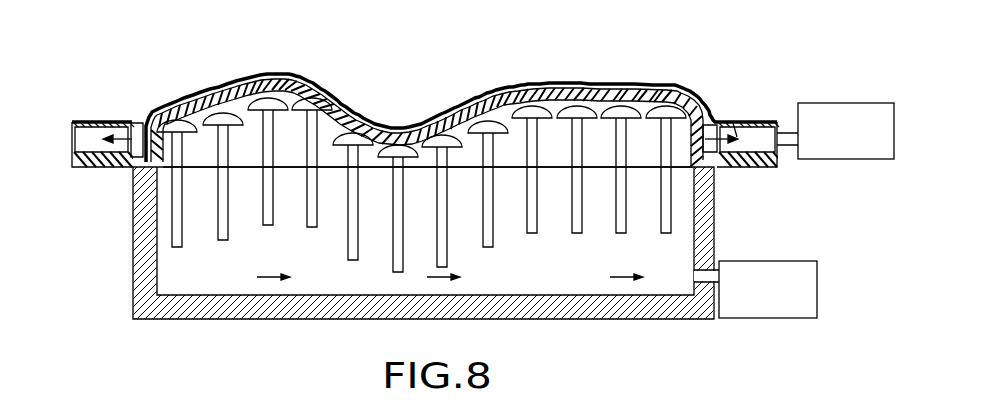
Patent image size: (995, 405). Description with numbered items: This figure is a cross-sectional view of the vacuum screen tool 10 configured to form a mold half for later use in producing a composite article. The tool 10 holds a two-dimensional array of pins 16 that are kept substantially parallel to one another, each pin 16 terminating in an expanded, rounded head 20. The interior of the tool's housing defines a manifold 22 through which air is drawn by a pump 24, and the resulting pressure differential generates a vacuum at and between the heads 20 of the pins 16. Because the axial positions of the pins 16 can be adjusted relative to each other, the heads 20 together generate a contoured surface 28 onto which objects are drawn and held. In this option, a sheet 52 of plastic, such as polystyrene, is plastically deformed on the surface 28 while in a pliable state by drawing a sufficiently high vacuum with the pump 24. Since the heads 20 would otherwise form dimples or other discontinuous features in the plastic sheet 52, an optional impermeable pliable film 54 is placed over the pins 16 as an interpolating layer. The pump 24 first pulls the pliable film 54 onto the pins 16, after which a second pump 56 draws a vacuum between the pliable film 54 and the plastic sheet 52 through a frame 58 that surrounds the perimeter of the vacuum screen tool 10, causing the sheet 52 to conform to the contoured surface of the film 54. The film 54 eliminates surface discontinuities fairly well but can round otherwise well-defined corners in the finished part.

The vacuum screen tool 10 is at (121, 235).
The pins 16 is at (318, 242).
The head 20 is at (270, 108).
The manifold 22 is at (481, 280).
The pump 24 is at (767, 318).
The surface 28 is at (353, 97).
The sheets of plastic 52 is at (440, 110).
The pliable film 54 is at (742, 170).
The second pump 56 is at (828, 107).
The frame 58 is at (72, 137).